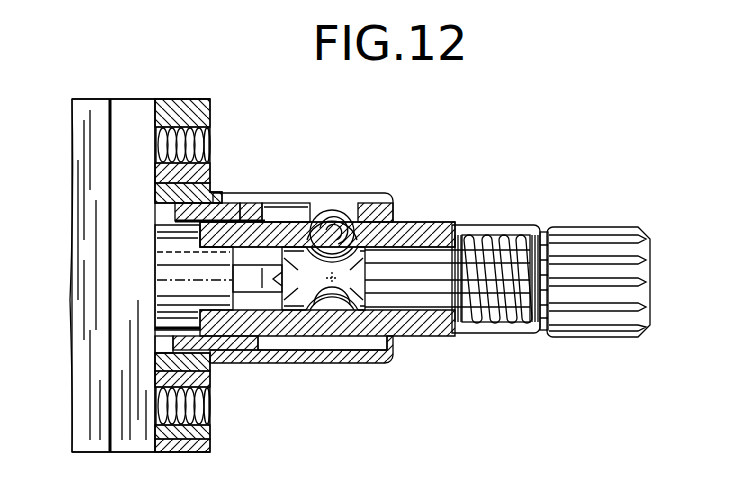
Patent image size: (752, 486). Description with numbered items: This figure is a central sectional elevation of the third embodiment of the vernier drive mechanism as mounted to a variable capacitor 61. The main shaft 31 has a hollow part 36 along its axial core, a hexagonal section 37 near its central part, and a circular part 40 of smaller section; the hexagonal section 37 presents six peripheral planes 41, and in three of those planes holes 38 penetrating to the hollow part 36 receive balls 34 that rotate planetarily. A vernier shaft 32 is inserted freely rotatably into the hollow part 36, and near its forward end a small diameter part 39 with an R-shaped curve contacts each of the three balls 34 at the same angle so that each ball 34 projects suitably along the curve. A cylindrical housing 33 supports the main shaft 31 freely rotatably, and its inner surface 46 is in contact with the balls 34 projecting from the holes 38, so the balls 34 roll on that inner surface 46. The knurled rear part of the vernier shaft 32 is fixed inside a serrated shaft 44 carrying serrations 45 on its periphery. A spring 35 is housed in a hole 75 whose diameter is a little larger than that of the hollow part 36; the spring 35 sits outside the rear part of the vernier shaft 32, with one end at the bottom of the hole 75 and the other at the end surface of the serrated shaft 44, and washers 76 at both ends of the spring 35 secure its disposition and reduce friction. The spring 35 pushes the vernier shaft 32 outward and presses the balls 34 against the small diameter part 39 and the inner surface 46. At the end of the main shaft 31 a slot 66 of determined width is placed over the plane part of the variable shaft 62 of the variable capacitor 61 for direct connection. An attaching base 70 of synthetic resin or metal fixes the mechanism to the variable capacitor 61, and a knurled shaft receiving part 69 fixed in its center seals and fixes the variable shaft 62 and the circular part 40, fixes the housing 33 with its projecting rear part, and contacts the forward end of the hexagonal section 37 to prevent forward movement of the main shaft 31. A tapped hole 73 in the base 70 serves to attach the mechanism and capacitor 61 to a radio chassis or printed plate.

The variable capacitor 61 is at (110, 100).
The attaching base 70 is at (190, 100).
The tapped hole 73 is at (212, 140).
The variable shaft 62 is at (160, 214).
The shaft receiving part 69 is at (228, 205).
The hexagonal section 37 is at (280, 212).
The peripheral planes 41 is at (298, 206).
The cylindrical housing 33 is at (334, 202).
The balls 34 is at (372, 198).
The holes 38 is at (396, 216).
The main shaft 31 is at (455, 226).
The hole 75 is at (498, 238).
The spring 35 is at (541, 233).
The serrated shaft 44 is at (595, 229).
The serrations 45 is at (589, 332).
The washers 76 is at (533, 337).
The vernier shaft 32 is at (437, 322).
The circular part 40 is at (401, 339).
The hollow part 36 is at (386, 360).
The inner surface 46 is at (349, 350).
The small diameter part 39 is at (327, 312).
The slot 66 is at (223, 355).